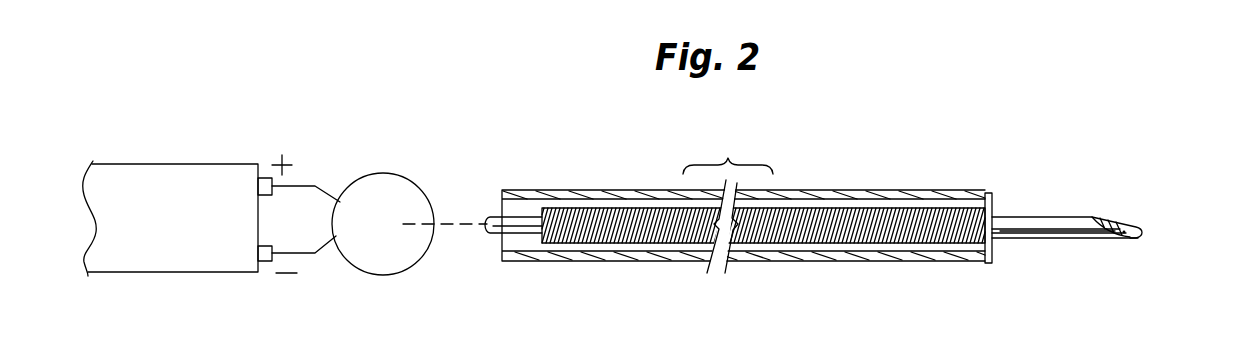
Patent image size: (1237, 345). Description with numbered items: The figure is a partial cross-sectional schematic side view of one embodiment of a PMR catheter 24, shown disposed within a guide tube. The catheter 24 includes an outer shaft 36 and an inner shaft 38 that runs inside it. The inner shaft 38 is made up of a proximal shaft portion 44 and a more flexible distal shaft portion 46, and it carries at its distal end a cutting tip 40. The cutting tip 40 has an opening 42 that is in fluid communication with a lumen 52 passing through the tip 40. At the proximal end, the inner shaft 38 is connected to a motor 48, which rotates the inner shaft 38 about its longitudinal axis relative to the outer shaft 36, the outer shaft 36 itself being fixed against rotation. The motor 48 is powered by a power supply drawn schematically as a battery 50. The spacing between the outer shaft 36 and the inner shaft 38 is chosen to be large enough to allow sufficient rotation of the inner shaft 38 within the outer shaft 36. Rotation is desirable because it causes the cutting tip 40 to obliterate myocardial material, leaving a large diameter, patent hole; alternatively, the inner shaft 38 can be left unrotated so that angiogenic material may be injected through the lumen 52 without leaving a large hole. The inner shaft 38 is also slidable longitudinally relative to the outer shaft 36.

The catheter 24 is at (827, 188).
The outer shaft 36 is at (789, 201).
The inner shaft 38 is at (1028, 215).
The cutting tip 40 is at (1136, 239).
The opening 42 is at (1120, 222).
The proximal shaft portion 44 is at (490, 215).
The distal shaft portion 46 is at (635, 227).
The motor 48 is at (400, 258).
The battery 50 is at (208, 262).
The lumen 52 is at (1039, 240).